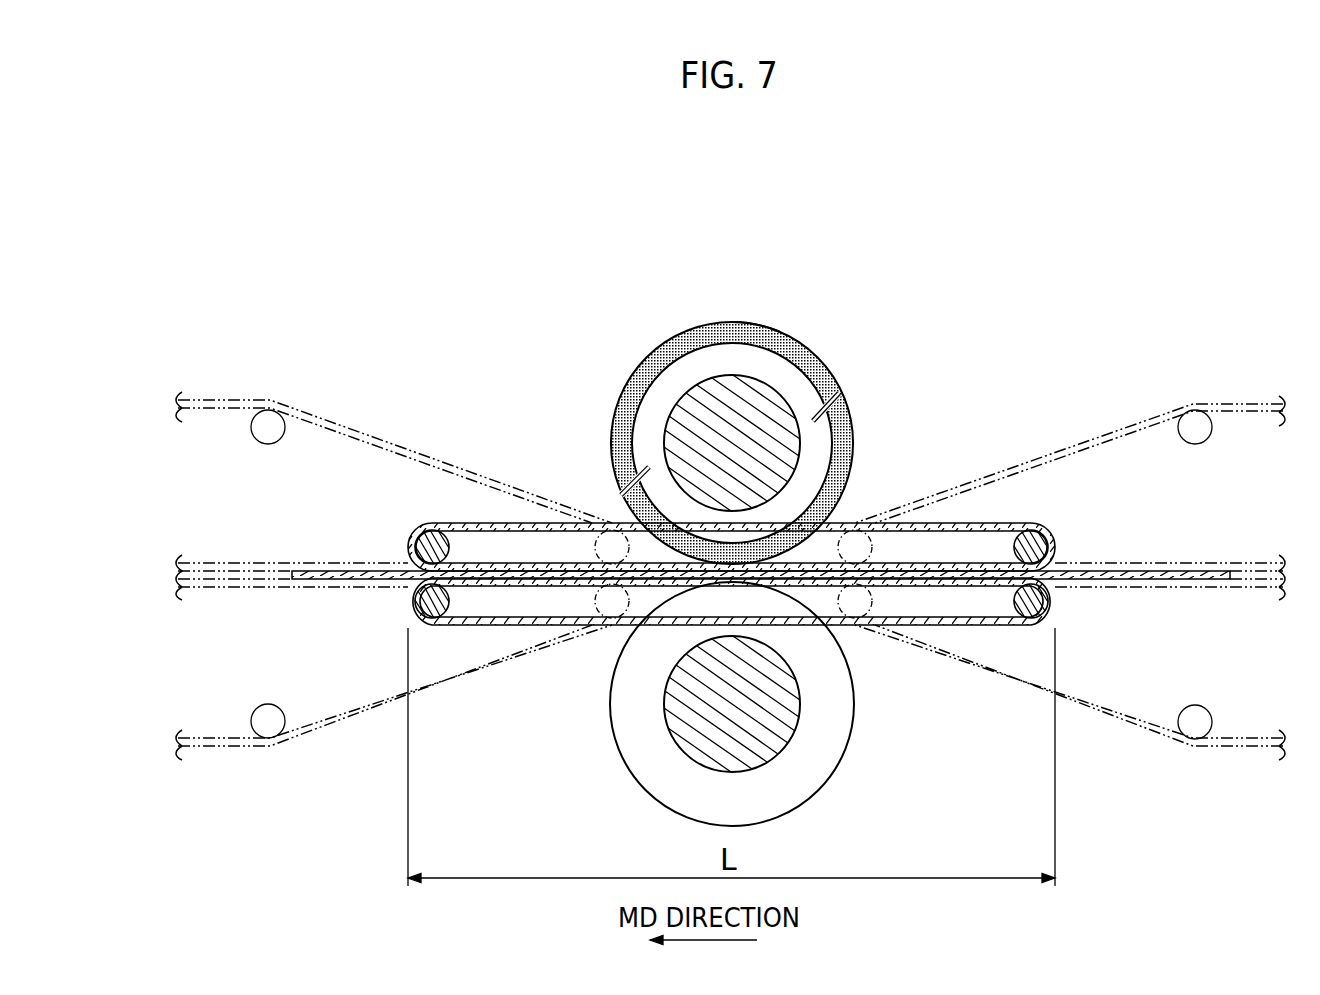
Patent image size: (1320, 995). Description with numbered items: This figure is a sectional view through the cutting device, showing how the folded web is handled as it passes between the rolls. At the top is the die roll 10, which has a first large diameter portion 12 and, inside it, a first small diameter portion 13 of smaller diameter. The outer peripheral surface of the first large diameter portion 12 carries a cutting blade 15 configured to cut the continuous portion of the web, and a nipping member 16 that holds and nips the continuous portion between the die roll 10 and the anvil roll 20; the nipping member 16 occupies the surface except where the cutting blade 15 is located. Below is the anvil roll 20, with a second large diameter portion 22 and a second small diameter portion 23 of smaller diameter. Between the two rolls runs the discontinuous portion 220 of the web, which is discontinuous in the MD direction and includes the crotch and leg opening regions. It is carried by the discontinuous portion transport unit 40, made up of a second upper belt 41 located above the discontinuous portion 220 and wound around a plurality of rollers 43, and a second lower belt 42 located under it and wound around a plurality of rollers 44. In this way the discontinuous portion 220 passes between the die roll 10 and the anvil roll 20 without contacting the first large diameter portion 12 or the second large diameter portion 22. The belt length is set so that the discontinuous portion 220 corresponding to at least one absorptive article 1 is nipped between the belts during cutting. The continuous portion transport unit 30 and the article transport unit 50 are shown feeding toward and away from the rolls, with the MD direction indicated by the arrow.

The absorptive article 1 is at (730, 546).
The die roll 10 is at (746, 388).
The first large diameter portion 12 is at (657, 343).
The first small diameter portion 13 is at (748, 396).
The cutting blade 15 is at (843, 392).
The nipping member 16 is at (740, 327).
The anvil roll 20 is at (704, 723).
The second large diameter portion 22 is at (815, 772).
The second small diameter portion 23 is at (762, 755).
The continuous portion transport unit 30 is at (1093, 420).
The discontinuous portion transport unit 40 is at (731, 570).
The second upper belt 41 is at (777, 525).
The second lower belt 42 is at (789, 625).
The rollers 43 is at (410, 545).
The rollers 44 is at (410, 600).
The article transport unit 50 is at (420, 433).
The discontinuous portion 220 is at (1178, 573).